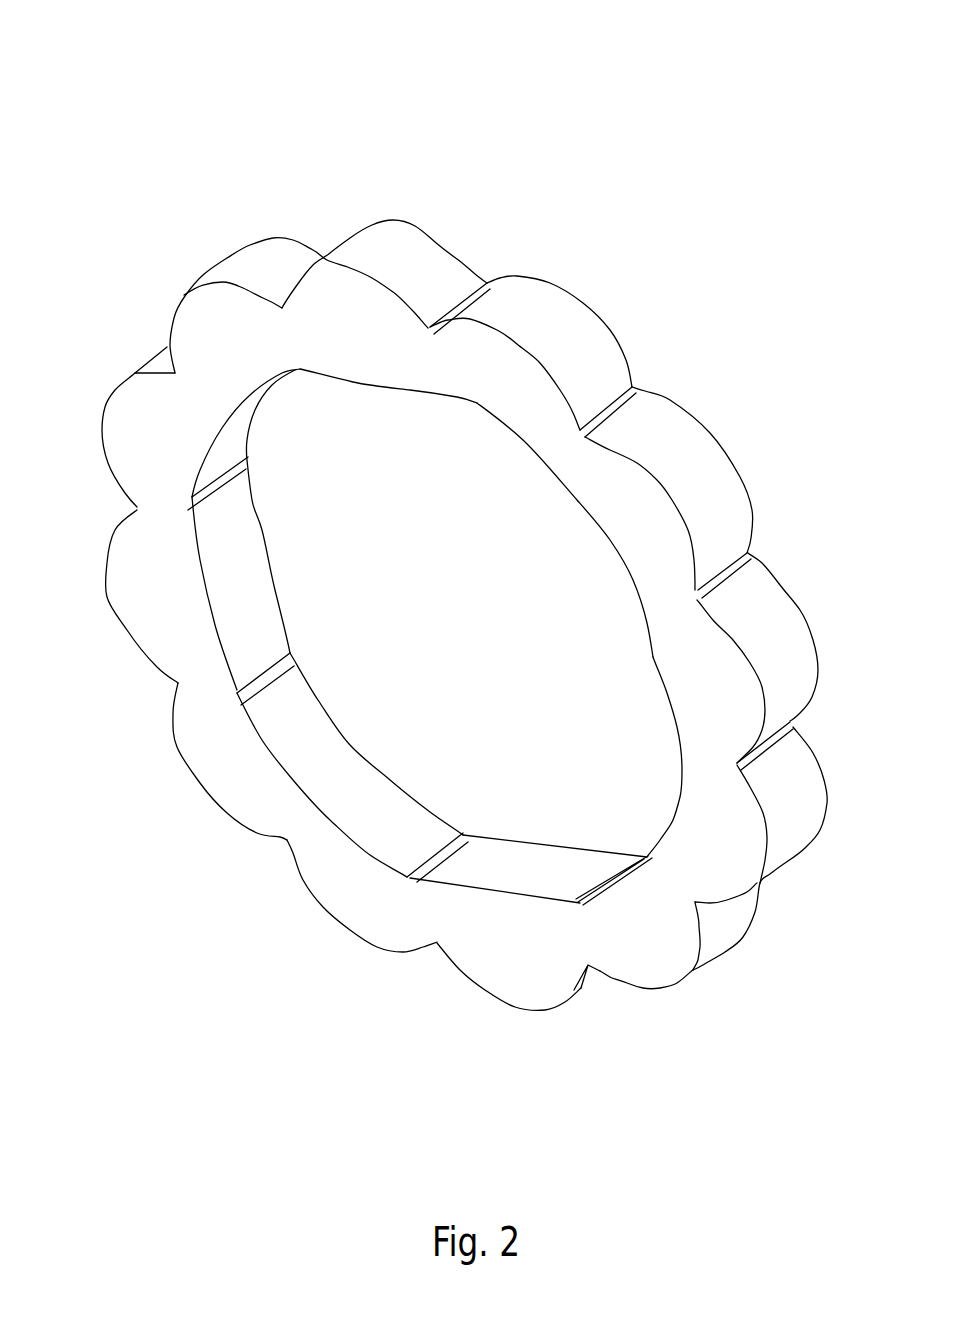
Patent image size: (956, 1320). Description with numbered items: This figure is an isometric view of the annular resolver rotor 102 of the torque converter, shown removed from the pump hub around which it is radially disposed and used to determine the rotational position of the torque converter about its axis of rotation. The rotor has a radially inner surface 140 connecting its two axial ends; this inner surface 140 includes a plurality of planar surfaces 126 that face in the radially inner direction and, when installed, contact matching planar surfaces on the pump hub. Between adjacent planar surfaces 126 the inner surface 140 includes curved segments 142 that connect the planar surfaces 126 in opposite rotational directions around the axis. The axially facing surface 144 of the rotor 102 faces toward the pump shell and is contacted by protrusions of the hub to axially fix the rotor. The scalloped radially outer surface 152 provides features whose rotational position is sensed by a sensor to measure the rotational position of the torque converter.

The resolver rotor 102 is at (688, 86).
The planar surfaces 126 is at (358, 375).
The radially inner surface 140 is at (521, 441).
The curved segments 142 is at (237, 420).
The surface 144 is at (143, 432).
The radially outer surface 152 is at (435, 262).